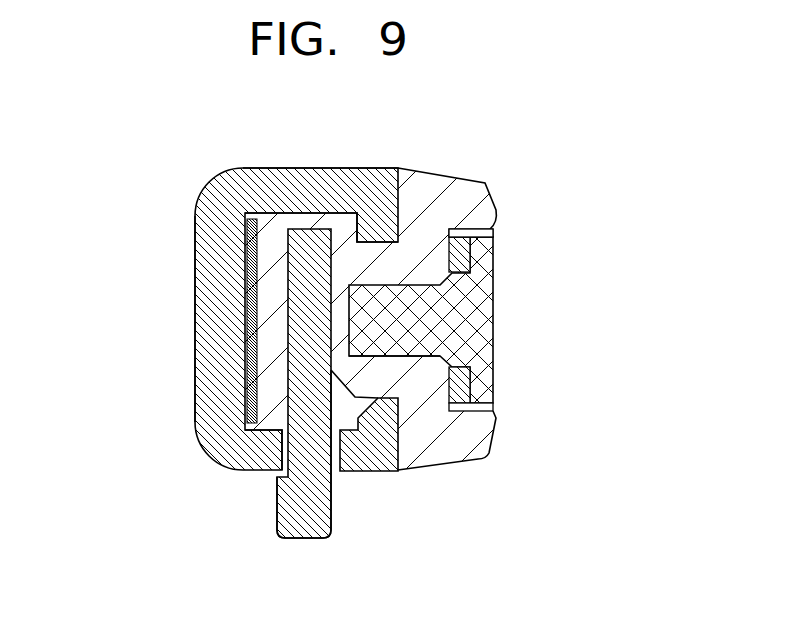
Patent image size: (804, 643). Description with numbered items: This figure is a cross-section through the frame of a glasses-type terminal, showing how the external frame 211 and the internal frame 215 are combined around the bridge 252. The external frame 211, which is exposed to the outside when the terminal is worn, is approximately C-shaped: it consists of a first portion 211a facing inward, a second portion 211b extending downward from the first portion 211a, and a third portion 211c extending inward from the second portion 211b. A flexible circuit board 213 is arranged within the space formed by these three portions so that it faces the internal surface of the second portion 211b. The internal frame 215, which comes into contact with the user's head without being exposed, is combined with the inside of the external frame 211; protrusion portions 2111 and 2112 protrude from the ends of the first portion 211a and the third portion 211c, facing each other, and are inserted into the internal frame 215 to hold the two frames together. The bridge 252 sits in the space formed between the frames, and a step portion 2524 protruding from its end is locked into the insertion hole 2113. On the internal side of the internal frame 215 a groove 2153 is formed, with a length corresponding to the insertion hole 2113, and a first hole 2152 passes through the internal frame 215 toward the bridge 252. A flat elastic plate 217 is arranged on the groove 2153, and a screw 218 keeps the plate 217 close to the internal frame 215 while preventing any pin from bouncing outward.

The external frame 211 is at (212, 276).
The first portion 211a is at (267, 183).
The second portion 211b is at (210, 335).
The third portion 211c is at (277, 448).
The protrusion portion 2111 is at (356, 229).
The protrusion portion 2112 is at (379, 473).
The insertion hole 2113 is at (336, 449).
The flexible circuit board 213 is at (249, 216).
The internal frame 215 is at (430, 193).
The plate 217 is at (462, 247).
The screw 218 is at (425, 302).
The first hole 2152 is at (383, 356).
The groove 2153 is at (485, 232).
The bridge 252 is at (297, 517).
The step portion 2524 is at (276, 478).